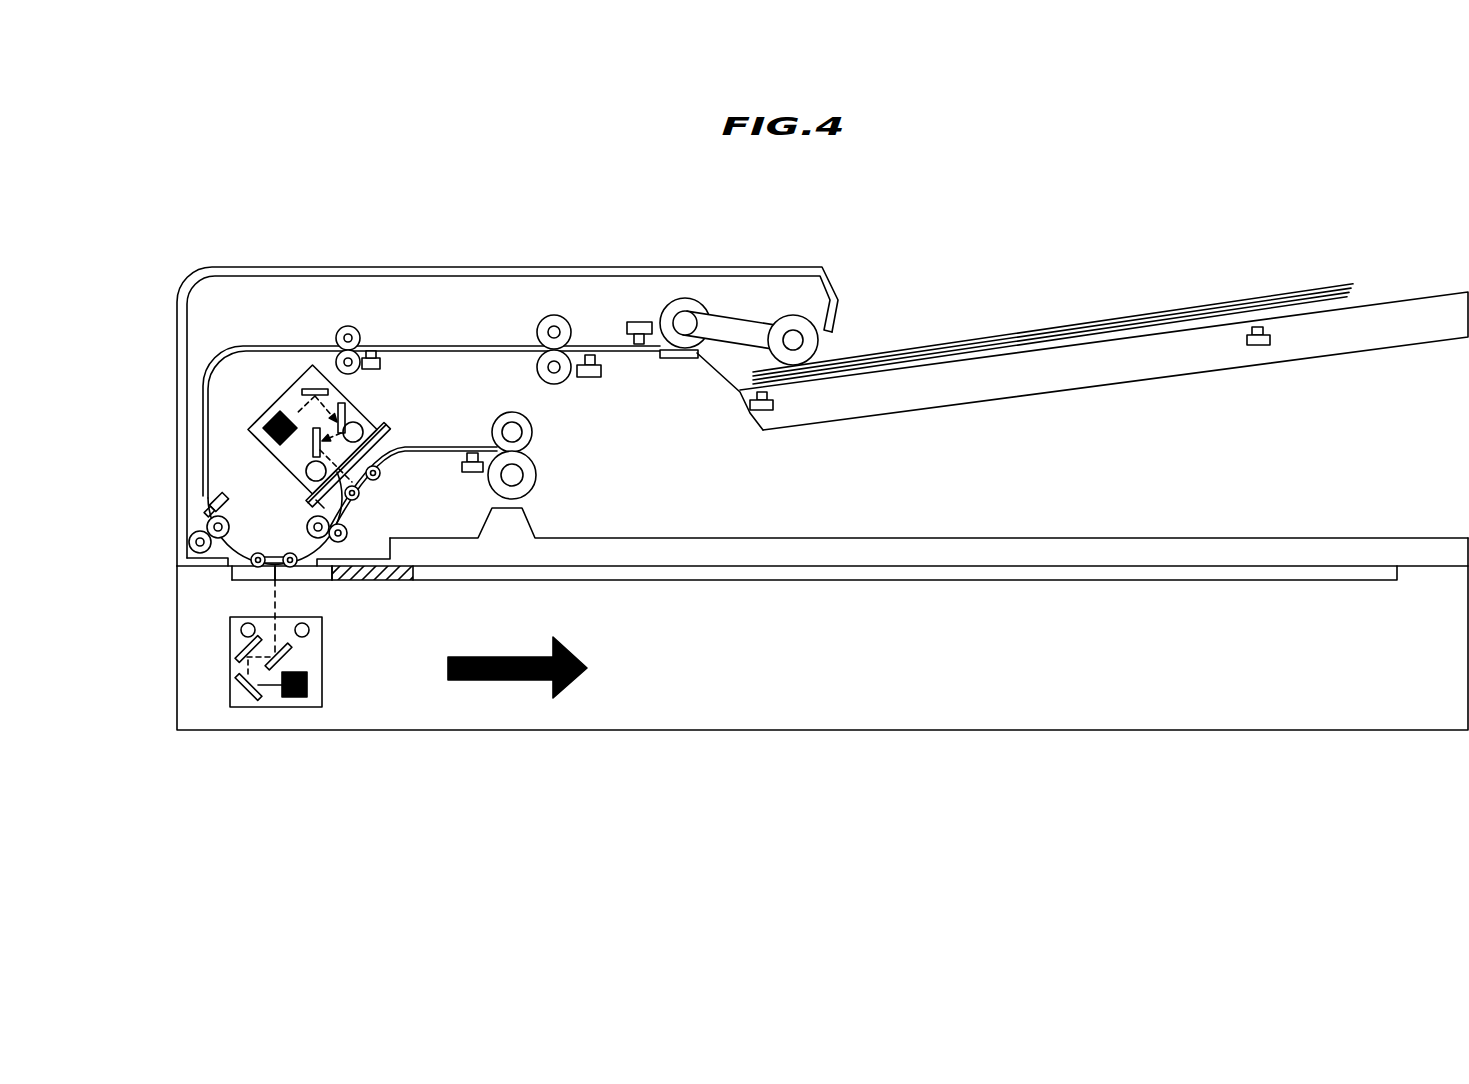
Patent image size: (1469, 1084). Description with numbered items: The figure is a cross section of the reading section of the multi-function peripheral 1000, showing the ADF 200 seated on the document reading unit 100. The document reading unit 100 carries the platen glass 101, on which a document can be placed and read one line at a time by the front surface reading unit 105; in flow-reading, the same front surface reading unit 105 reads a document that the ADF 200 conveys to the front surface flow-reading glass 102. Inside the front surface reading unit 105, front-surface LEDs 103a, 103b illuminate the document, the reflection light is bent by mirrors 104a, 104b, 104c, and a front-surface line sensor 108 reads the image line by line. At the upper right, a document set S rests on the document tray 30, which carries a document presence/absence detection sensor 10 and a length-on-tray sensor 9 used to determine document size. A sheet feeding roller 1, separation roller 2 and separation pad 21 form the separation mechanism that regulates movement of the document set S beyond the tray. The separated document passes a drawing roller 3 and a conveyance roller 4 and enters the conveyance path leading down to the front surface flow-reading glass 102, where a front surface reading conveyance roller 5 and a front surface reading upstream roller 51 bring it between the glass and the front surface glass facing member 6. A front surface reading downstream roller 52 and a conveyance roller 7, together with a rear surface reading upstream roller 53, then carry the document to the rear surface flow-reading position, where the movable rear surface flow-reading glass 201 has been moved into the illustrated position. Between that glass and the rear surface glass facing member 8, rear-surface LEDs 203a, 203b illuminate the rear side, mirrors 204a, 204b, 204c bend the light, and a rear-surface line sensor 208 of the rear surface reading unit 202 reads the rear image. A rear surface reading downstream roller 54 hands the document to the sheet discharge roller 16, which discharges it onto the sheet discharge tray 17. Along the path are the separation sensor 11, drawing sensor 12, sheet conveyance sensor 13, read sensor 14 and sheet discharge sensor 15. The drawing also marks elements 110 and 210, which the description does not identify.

The multi-function peripheral 1000 is at (906, 219).
The ADF 200 is at (383, 267).
The document reading unit 100 is at (1295, 732).
The sheet discharge tray 17 is at (640, 537).
The platen glass 101 is at (654, 581).
The front surface flow-reading glass 102 is at (262, 581).
The front surface reading unit 105 is at (290, 617).
The jump stand 110 is at (383, 581).
The front surface reading upstream roller 51 is at (228, 562).
The rear surface reading unit 202 is at (286, 380).
The rear surface flow-reading glass 201 is at (391, 436).
The reading position 210 is at (315, 504).
The rear-surface line sensor 208 is at (268, 418).
The mirror 204a is at (313, 452).
The mirror 204b is at (345, 404).
The mirror 204c is at (316, 388).
The rear-surface LED 203a is at (310, 472).
The rear-surface LED 203b is at (362, 428).
The rear surface glass facing member 8 is at (380, 479).
The rear surface reading downstream roller 54 is at (381, 473).
The rear surface reading upstream roller 53 is at (359, 496).
The conveyance roller 7 is at (347, 534).
The front surface glass facing member 6 is at (256, 553).
The front surface reading downstream roller 52 is at (288, 553).
The front surface reading conveyance roller 5 is at (189, 542).
The read sensor 14 is at (206, 506).
The conveyance roller 4 is at (357, 327).
The sheet conveyance sensor 13 is at (382, 364).
The drawing roller 3 is at (538, 323).
The drawing sensor 12 is at (590, 378).
The separation sensor 11 is at (638, 322).
The separation roller 2 is at (704, 310).
The sheet feeding roller 1 is at (820, 341).
The separation pad 21 is at (678, 359).
The document tray 30 is at (1050, 396).
The document presence/absence detection sensor 10 is at (753, 411).
The document set S is at (1058, 332).
The length-on-tray sensor 9 is at (1258, 346).
The sheet discharge roller 16 is at (512, 412).
The sheet discharge sensor 15 is at (474, 473).
The front-surface LED 103a is at (310, 630).
The front-surface LED 103b is at (240, 634).
The mirror 104a is at (298, 650).
The mirror 104b is at (238, 650).
The mirror 104c is at (245, 700).
The front-surface line sensor 108 is at (308, 685).